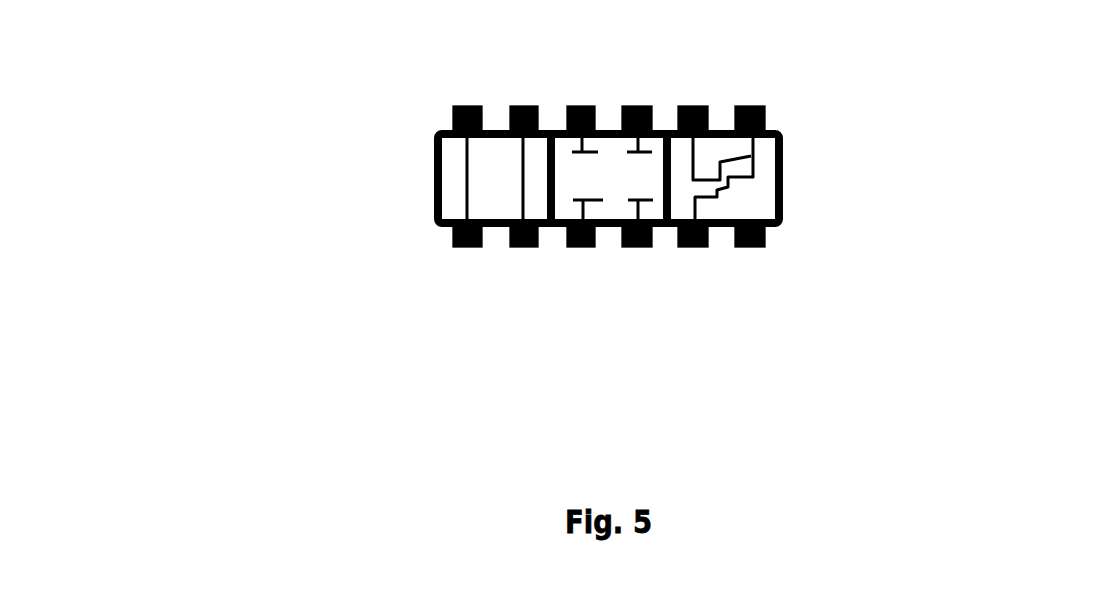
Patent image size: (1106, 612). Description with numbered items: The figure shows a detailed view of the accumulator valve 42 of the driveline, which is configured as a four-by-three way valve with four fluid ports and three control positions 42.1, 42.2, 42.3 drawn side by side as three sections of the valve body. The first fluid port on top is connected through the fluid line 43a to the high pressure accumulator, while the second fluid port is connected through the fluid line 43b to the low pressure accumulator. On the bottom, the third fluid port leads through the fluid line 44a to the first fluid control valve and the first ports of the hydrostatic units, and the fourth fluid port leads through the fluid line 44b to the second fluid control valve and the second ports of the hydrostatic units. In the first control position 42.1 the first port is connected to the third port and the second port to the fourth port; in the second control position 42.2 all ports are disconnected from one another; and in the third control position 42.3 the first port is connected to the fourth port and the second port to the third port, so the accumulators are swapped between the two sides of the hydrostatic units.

The accumulator valve 42 is at (998, 177).
The first control position 42.1 is at (547, 317).
The second control position 42.2 is at (663, 310).
The third control position 42.3 is at (777, 310).
The fluid line 43a is at (695, 105).
The fluid line 43b is at (755, 105).
The fluid line 44a is at (697, 268).
The fluid line 44b is at (753, 275).